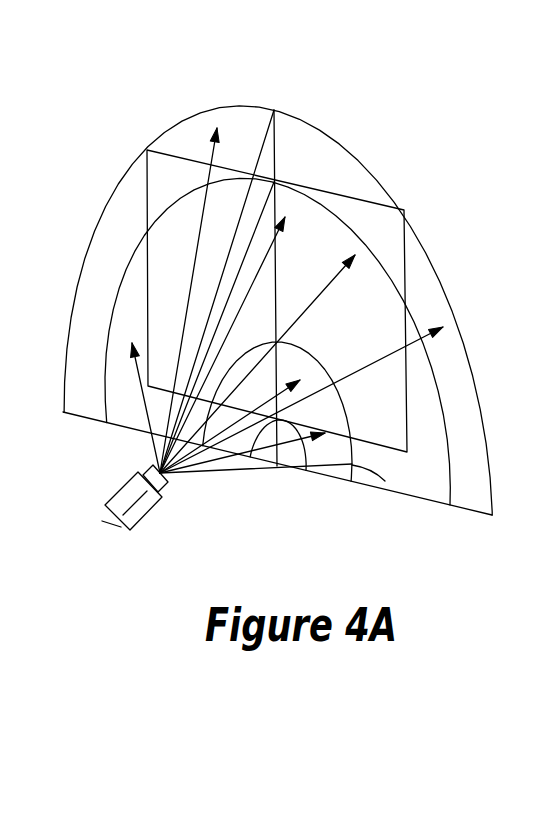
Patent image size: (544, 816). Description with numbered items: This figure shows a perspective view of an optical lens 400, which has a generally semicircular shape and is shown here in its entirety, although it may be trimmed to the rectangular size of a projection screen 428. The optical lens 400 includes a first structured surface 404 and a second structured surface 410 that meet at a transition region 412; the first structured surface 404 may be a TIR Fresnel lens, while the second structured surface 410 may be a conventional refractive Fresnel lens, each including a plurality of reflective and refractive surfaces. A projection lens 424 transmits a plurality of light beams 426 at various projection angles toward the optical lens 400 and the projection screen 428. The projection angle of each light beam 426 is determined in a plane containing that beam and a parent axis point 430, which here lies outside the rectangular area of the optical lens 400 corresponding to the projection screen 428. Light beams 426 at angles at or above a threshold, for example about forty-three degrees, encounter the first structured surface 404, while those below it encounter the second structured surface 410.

The optical lens 400 is at (241, 46).
The first structured surface 404 is at (180, 133).
The second structured surface 410 is at (328, 458).
The transition region 412 is at (385, 481).
The projection lens 424 is at (139, 512).
The light beams 426 is at (236, 389).
The projection screen 428 is at (357, 197).
The parent axis point 430 is at (277, 466).